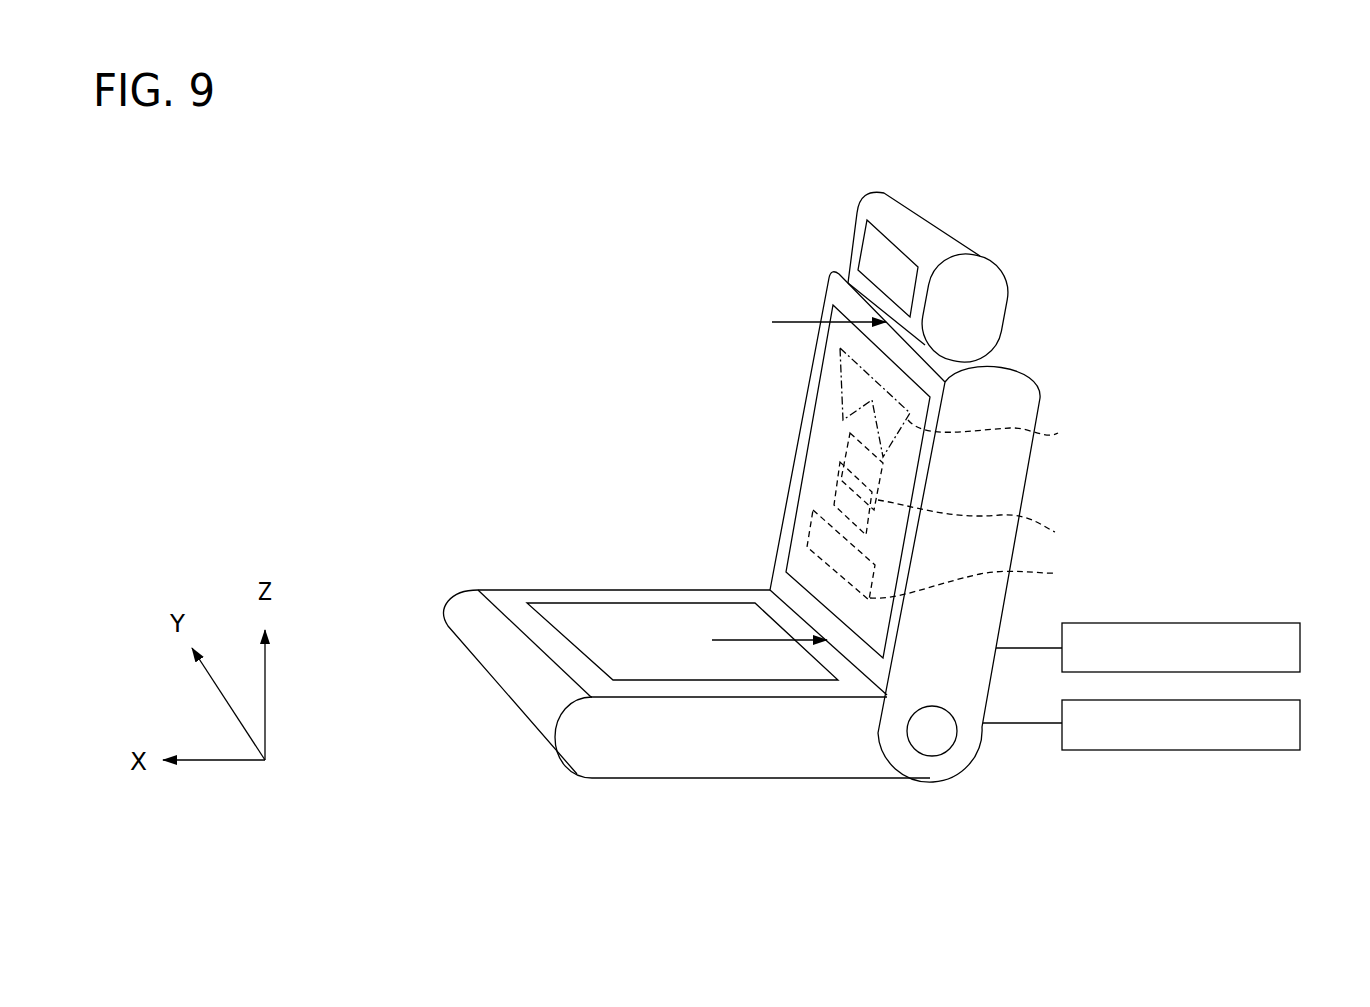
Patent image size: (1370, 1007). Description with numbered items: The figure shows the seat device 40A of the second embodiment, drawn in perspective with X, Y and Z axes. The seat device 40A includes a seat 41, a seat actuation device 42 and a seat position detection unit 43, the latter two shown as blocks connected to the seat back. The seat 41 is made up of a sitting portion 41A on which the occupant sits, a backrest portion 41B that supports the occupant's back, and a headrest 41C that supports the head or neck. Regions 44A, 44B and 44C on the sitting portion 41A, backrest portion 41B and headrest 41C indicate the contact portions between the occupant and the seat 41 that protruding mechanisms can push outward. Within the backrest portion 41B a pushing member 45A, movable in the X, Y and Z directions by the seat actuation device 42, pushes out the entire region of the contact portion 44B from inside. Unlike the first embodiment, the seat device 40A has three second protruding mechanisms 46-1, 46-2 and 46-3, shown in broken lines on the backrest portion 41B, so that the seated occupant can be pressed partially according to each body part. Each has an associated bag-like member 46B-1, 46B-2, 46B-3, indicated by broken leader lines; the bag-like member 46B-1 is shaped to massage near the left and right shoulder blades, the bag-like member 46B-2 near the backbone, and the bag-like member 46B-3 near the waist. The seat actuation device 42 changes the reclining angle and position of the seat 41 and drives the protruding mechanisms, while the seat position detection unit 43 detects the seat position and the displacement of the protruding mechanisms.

The seat device 40A is at (1164, 184).
The seat 41 is at (640, 372).
The sitting portion 41A is at (760, 780).
The backrest portion 41B is at (1030, 480).
The headrest 41C is at (1005, 322).
The seat actuation device 42 is at (1302, 648).
The seat position detection unit 43 is at (1302, 723).
The contact portion region 44A is at (619, 630).
The contact portion 44B is at (838, 340).
The contact portion region 44C is at (886, 262).
The pushing member 45A is at (835, 488).
The second protruding mechanism 46-1 is at (853, 382).
The second protruding mechanism 46-2 is at (853, 448).
The second protruding mechanism 46-3 is at (833, 548).
The bag-like member 46B-1 is at (1019, 434).
The bag-like member 46B-2 is at (1000, 522).
The bag-like member 46B-3 is at (996, 579).